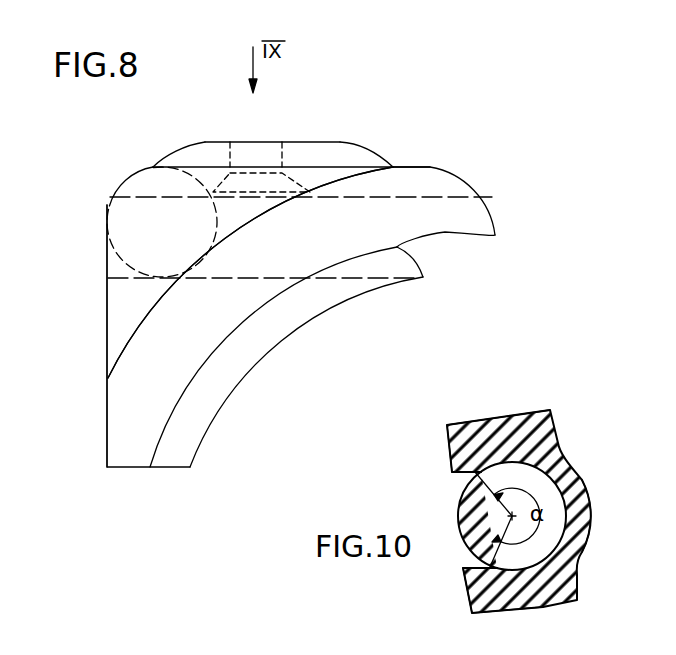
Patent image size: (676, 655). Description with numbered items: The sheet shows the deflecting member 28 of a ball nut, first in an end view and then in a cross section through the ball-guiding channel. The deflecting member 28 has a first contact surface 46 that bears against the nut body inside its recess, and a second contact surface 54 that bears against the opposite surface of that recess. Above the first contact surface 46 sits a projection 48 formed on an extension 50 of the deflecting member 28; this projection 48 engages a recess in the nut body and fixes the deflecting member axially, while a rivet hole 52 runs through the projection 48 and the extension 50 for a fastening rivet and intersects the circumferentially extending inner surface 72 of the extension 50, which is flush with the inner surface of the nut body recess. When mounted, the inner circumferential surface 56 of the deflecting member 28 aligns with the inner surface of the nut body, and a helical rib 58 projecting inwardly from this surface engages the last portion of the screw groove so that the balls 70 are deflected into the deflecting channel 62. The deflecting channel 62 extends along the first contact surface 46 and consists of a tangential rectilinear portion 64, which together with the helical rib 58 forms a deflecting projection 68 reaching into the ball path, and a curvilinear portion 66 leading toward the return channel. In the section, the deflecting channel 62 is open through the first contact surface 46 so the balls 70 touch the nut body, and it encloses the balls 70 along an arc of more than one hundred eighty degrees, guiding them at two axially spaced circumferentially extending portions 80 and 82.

In FIG. 8, the deflecting member 28 is at (108, 318).
In FIG. 10, the deflecting member 28 is at (543, 410).
In FIG. 8, the first contact surface 46 is at (403, 164).
In FIG. 10, the first contact surface 46 is at (447, 448).
In FIG. 8, the projection 48 is at (316, 148).
In FIG. 8, the extension 50 is at (118, 282).
In FIG. 8, the rivet hole 52 is at (246, 148).
In FIG. 8, the second contact surface 54 is at (107, 353).
In FIG. 8, the inner circumferential surface 56 is at (457, 238).
In FIG. 8, the helical rib 58 is at (237, 370).
In FIG. 8, the deflecting channel 62 is at (347, 207).
In FIG. 10, the deflecting channel 62 is at (557, 533).
In FIG. 8, the rectilinear portion 64 is at (332, 242).
In FIG. 8, the curvilinear portion 66 is at (138, 226).
In FIG. 8, the deflecting projection 68 is at (397, 275).
In FIG. 10, the balls 70 is at (472, 514).
In FIG. 8, the inner surface of the extension 72 is at (157, 305).
In FIG. 10, the circumferentially extending portion 80 is at (517, 462).
In FIG. 10, the circumferentially extending portion 82 is at (520, 590).